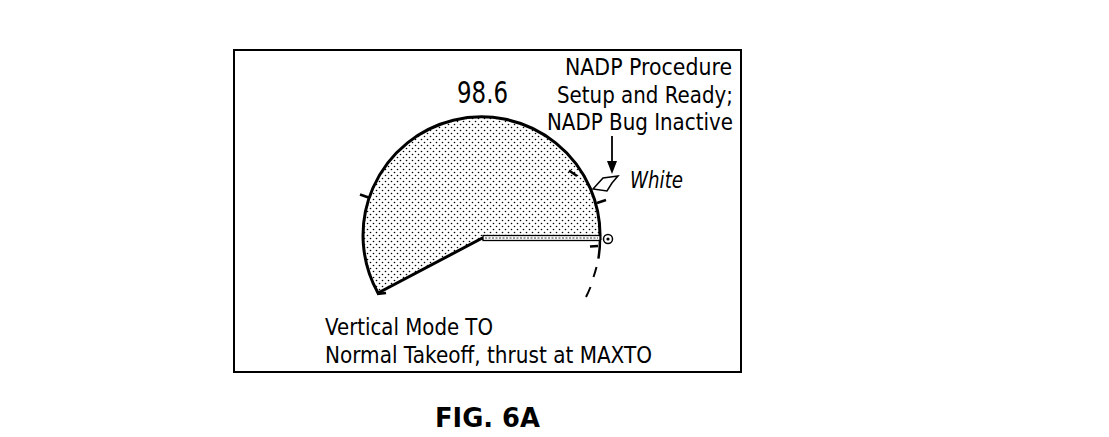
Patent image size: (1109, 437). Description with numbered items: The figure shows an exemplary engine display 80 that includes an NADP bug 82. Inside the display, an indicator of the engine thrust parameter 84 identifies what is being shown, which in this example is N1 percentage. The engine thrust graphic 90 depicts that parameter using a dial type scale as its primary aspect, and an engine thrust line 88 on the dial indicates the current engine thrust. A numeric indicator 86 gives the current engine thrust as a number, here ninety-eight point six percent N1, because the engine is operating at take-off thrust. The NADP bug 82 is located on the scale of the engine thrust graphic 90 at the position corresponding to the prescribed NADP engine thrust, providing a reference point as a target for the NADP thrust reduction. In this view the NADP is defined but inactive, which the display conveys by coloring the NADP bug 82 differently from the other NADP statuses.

The engine display 80 is at (762, 37).
The NADP bug 82 is at (618, 190).
The engine thrust parameter 84 is at (278, 198).
The numeric indicator 86 is at (513, 290).
The engine thrust line 88 is at (537, 241).
The engine thrust graphic 90 is at (351, 265).